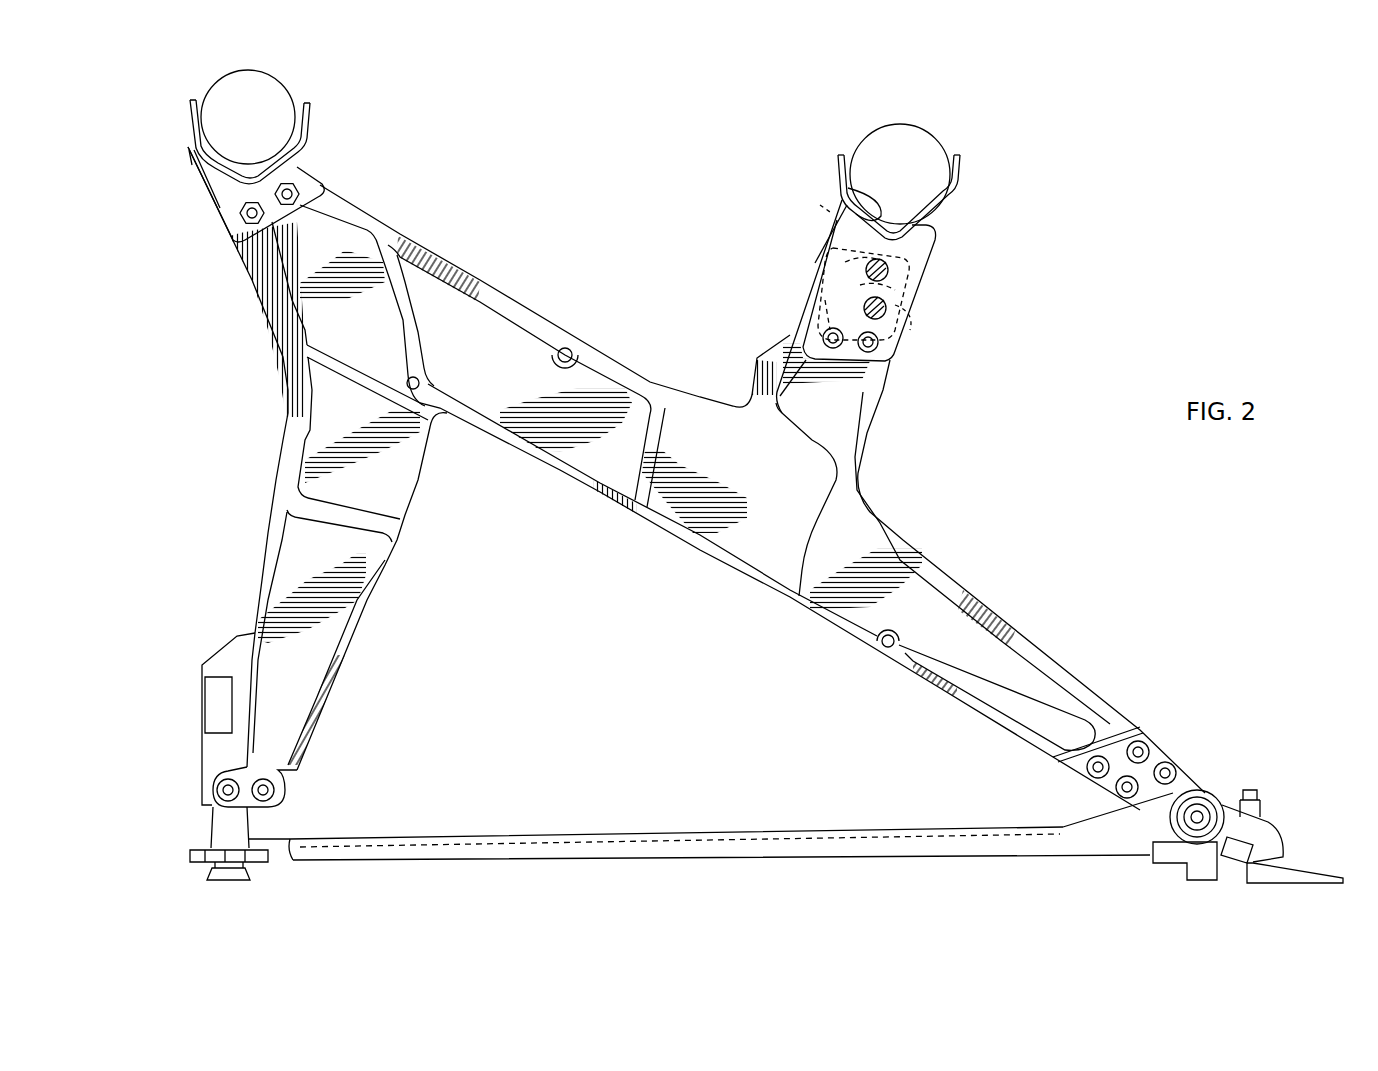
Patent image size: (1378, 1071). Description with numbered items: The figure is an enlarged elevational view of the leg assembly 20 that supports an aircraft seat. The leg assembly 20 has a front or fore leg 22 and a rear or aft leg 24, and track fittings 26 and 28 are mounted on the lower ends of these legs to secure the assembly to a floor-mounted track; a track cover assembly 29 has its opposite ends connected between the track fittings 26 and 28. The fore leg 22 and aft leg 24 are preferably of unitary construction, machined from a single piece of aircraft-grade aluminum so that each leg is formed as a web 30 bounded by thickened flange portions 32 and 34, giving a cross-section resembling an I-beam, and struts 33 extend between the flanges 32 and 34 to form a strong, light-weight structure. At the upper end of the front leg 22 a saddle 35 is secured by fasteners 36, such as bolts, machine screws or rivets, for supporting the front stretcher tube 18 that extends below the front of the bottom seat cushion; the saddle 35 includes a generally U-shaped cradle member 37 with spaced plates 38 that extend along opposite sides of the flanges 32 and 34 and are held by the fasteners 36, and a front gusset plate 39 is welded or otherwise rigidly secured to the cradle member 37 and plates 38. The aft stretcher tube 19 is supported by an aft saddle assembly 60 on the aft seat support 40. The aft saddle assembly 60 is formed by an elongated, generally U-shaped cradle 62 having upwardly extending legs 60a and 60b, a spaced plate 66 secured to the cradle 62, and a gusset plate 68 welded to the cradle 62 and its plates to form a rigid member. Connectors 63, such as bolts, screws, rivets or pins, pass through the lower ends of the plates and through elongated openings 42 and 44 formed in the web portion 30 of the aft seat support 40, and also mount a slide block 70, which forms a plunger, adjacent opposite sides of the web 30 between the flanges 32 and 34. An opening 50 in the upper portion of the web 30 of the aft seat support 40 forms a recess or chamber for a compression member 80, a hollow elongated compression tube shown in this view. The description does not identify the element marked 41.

The stretcher tube 18 is at (282, 80).
The aft stretcher tube 19 is at (936, 136).
The leg assembly 20 is at (978, 584).
The fore leg 22 is at (352, 640).
The aft leg 24 is at (1042, 660).
The track fitting 26 is at (252, 878).
The track fitting 28 is at (1282, 840).
The track cover assembly 29 is at (612, 840).
The web 30 is at (400, 250).
The flange portion 32 is at (297, 440).
The struts 33 is at (410, 375).
The flange portion 34 is at (513, 312).
The saddle 35 is at (322, 130).
The fasteners 36 is at (262, 218).
The U-shaped cradle member 37 is at (313, 118).
The spaced plates 38 is at (313, 187).
The front gusset plate 39 is at (207, 190).
The aft seat support 40 is at (888, 368).
The bracket edge 41 is at (877, 203).
The elongated opening 42 is at (795, 291).
The elongated opening 44 is at (910, 312).
The opening 50 is at (822, 205).
The aft saddle assembly 60 is at (970, 185).
The upwardly extending leg 60a is at (845, 160).
The upwardly extending leg 60b is at (957, 163).
The U-shaped cradle 62 is at (942, 227).
The connectors 63 is at (865, 353).
The spaced plate 66 is at (795, 282).
The gusset plate 68 is at (808, 248).
The slide block 70 is at (886, 306).
The compression member 80 is at (889, 266).